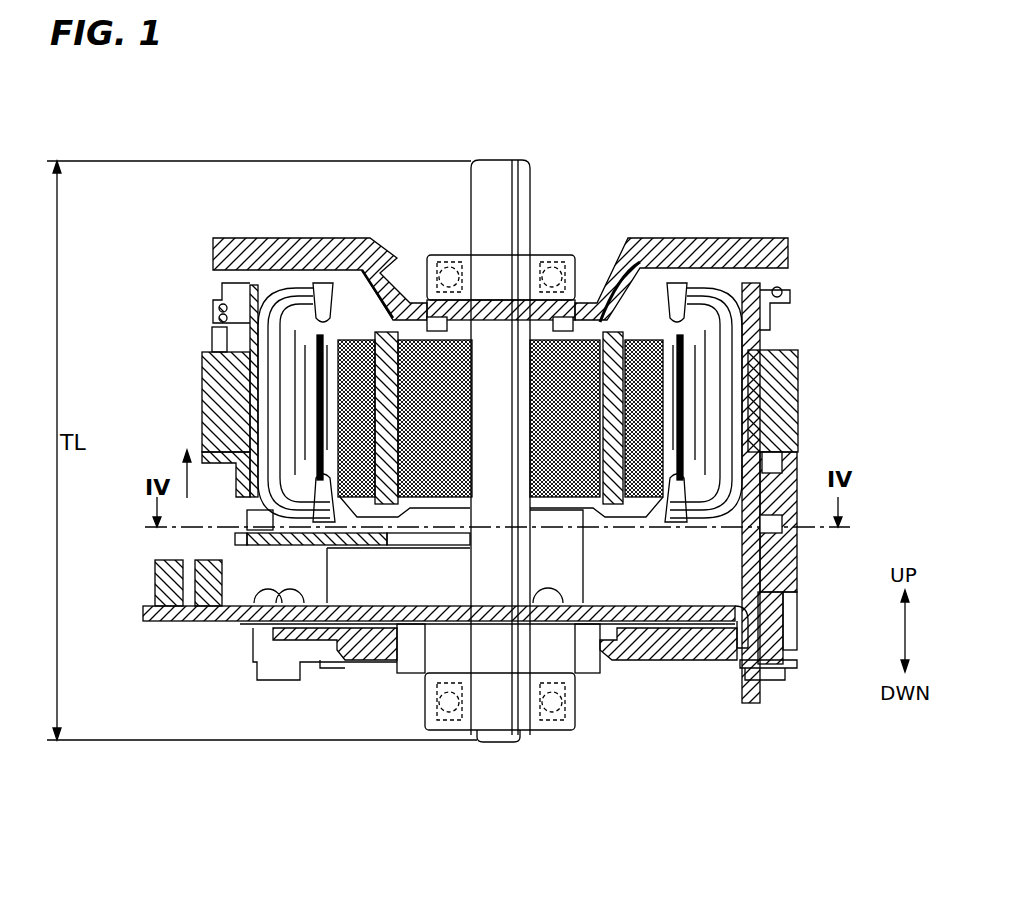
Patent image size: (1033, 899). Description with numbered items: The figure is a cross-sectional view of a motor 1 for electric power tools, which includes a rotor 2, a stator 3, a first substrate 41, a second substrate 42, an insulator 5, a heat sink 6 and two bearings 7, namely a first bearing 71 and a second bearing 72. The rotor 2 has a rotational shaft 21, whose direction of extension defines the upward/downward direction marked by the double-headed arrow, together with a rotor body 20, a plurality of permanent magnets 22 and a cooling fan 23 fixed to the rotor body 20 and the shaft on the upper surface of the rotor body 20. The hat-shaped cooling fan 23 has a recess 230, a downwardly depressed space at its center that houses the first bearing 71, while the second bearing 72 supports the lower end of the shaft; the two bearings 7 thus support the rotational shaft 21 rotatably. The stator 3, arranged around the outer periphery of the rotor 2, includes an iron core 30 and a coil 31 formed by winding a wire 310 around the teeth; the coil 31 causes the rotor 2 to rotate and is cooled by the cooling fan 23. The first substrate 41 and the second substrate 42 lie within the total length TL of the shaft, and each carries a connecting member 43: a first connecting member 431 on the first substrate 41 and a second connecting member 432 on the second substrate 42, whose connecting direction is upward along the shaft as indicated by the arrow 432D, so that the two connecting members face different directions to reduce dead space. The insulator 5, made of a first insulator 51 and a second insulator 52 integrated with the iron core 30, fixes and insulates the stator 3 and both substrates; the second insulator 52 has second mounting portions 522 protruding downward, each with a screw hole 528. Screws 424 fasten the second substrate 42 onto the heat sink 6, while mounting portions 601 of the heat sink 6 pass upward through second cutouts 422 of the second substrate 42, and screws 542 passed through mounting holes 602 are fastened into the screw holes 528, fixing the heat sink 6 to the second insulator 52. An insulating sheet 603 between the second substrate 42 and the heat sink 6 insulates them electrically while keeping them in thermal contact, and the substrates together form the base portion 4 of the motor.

The motor for electric power tools 1 is at (218, 131).
The rotor 2 is at (682, 200).
The rotor body 20 is at (587, 330).
The rotational shaft 21 is at (530, 215).
The permanent magnets 22 is at (617, 330).
The cooling fan 23 is at (673, 250).
The recess 230 is at (393, 258).
The stator 3 is at (156, 324).
The iron core 30 is at (207, 367).
The coil 31 is at (287, 348).
The wire 310 is at (280, 408).
The base portion 4 is at (416, 583).
The first substrate 41 is at (352, 533).
The second substrate 42 is at (227, 622).
The second cutouts 422 is at (745, 647).
The screws 424 is at (263, 598).
The connecting member 43 is at (240, 637).
The first connecting member 431 is at (273, 550).
The second connecting member 432 is at (163, 607).
The arrow indicating connecting direction 432D is at (183, 478).
The insulator 5 is at (843, 352).
The first insulator 51 is at (797, 347).
The second insulator 52 is at (797, 450).
The second mounting portions 522 is at (797, 572).
The screw hole 528 is at (793, 487).
The screws 542 is at (797, 655).
The heat sink 6 is at (657, 657).
The mounting portions 601 is at (797, 622).
The mounting hole 602 is at (770, 662).
The insulating sheet 603 is at (370, 630).
The bearings 7 is at (500, 458).
The first bearing 71 is at (498, 263).
The second bearing 72 is at (500, 715).